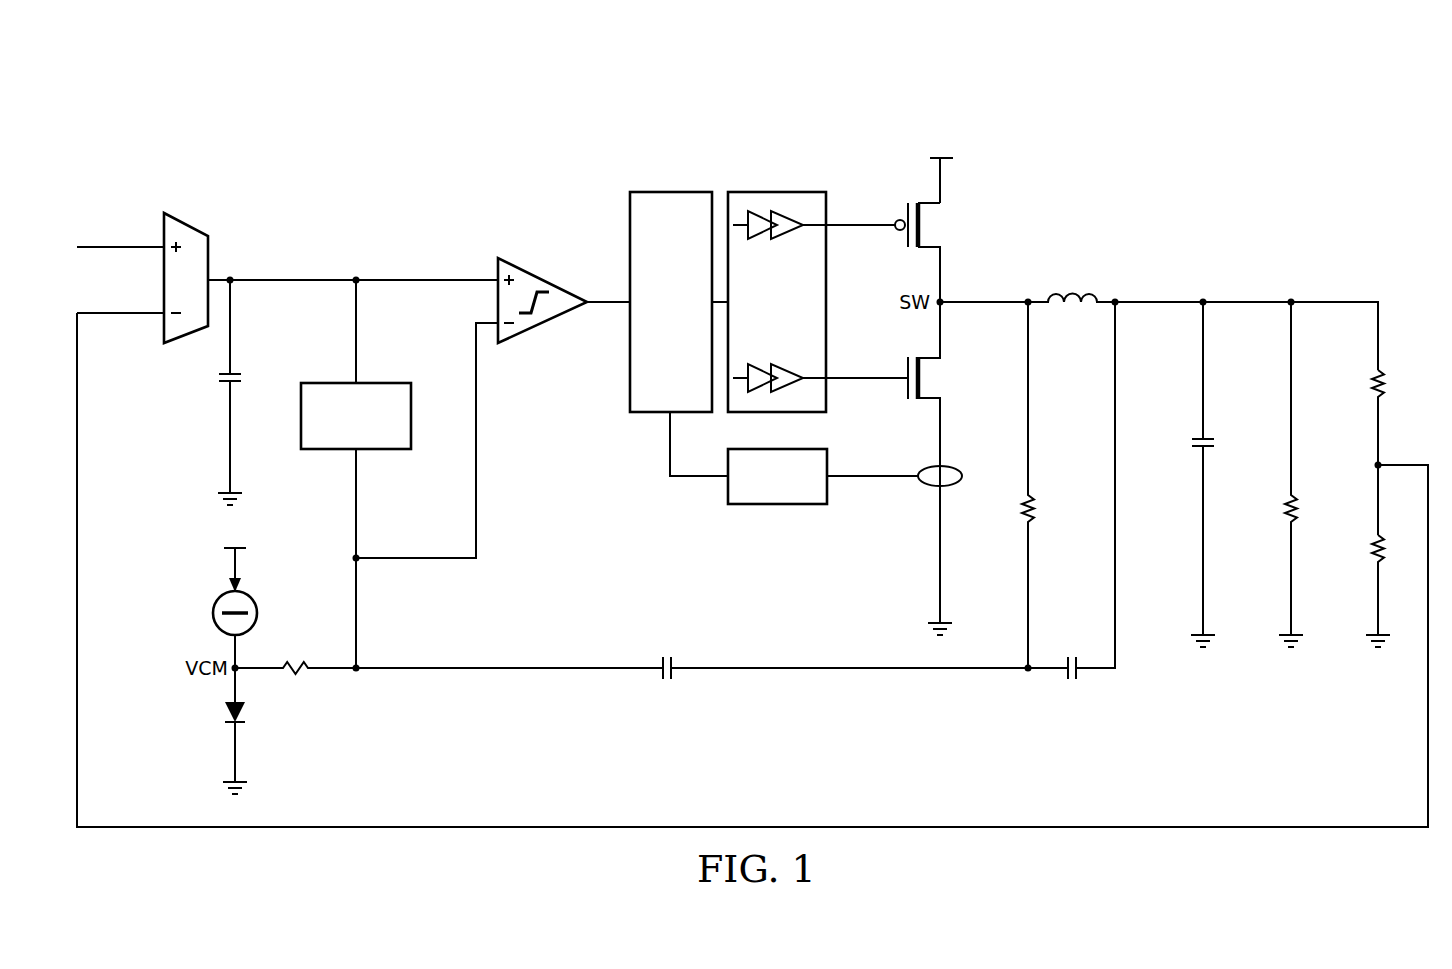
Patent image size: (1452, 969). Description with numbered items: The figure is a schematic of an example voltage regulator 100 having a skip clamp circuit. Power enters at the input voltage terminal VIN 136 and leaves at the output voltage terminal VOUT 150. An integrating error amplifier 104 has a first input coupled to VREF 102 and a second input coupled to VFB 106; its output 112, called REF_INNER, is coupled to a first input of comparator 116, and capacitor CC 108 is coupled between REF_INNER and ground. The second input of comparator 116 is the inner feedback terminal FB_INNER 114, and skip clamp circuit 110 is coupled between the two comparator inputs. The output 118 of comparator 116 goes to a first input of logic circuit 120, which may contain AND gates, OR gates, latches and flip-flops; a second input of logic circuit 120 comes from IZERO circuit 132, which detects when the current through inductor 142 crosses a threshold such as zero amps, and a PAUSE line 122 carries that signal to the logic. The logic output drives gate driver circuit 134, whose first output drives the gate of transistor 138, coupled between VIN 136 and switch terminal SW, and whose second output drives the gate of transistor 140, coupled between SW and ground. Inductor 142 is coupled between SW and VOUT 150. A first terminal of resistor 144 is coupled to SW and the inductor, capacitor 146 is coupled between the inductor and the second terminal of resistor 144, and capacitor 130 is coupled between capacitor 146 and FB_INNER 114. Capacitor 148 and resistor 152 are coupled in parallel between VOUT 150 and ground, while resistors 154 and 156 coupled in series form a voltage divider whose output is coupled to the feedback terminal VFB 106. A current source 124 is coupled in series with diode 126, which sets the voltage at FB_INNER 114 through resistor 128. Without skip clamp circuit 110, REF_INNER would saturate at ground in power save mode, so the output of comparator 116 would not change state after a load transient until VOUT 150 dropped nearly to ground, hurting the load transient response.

The voltage regulator 100 is at (594, 78).
The VREF 102 is at (88, 243).
The integrating error amplifier 104 is at (190, 214).
The VFB 106 is at (98, 310).
The capacitor CC 108 is at (218, 378).
The skip clamp circuit 110 is at (322, 383).
The output REF_INNER 112 is at (285, 278).
The inner feedback terminal FB_INNER 114 is at (415, 560).
The comparator 116 is at (549, 270).
The output of comparator 118 is at (605, 308).
The logic circuit 120 is at (672, 192).
The PAUSE signal line 122 is at (698, 479).
The current source 124 is at (218, 598).
The diode 126 is at (228, 712).
The resistor 128 is at (296, 679).
The capacitor 130 is at (669, 681).
The IZERO circuit 132 is at (775, 505).
The gate driver circuit 134 is at (777, 192).
The VIN 136 is at (953, 158).
The transistor 138 is at (904, 240).
The transistor 140 is at (904, 390).
The inductor 142 is at (1076, 308).
The resistor 144 is at (1022, 511).
The capacitor 146 is at (1073, 682).
The capacitor 148 is at (1192, 444).
The VOUT 150 is at (1335, 301).
The resistor 152 is at (1288, 508).
The resistor 154 is at (1374, 385).
The feedback resistor R2 156 is at (1374, 552).